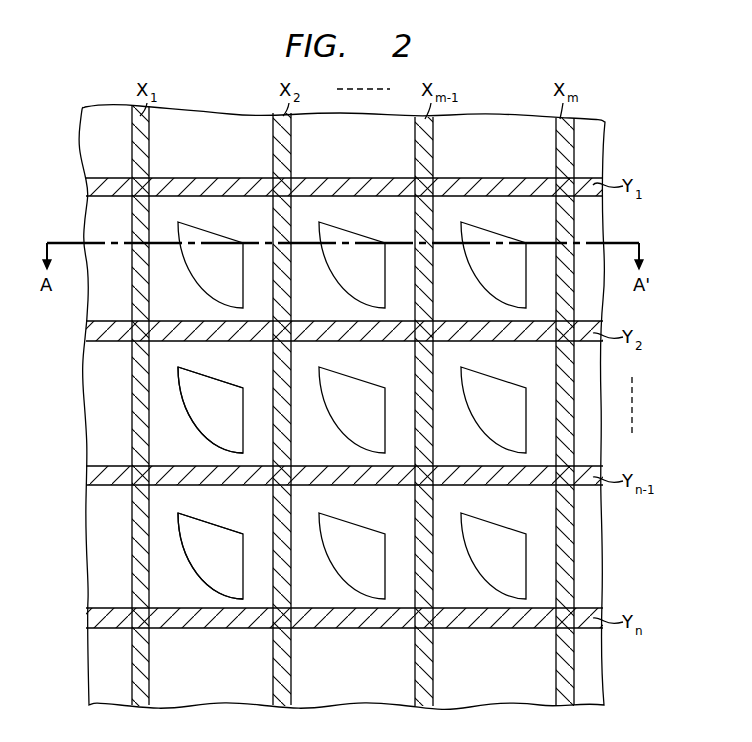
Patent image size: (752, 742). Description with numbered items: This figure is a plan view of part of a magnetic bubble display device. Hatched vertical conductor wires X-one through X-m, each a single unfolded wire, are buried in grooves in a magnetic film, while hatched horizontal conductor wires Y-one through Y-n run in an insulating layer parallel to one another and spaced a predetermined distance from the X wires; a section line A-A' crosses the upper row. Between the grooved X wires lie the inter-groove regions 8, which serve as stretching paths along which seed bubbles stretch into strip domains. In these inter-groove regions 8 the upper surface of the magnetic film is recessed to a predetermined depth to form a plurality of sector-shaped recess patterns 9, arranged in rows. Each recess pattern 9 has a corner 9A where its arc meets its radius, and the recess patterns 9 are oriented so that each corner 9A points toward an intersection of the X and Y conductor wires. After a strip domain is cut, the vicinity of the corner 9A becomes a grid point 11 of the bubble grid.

The inter-groove region 8 is at (162, 589).
The sector-shaped recess pattern 9 is at (223, 392).
The corner 9A is at (178, 367).
The grid point 11 is at (182, 387).